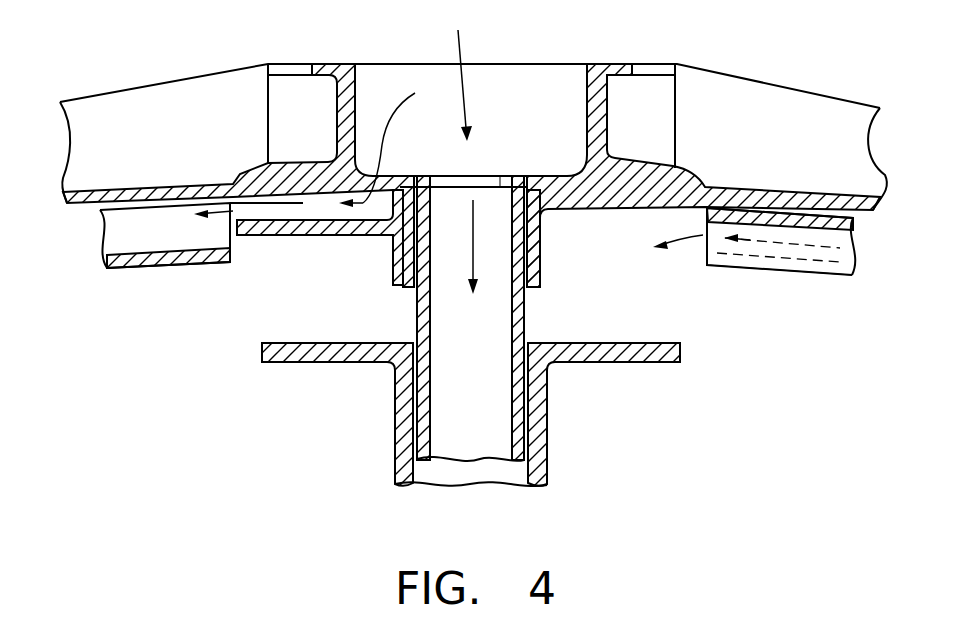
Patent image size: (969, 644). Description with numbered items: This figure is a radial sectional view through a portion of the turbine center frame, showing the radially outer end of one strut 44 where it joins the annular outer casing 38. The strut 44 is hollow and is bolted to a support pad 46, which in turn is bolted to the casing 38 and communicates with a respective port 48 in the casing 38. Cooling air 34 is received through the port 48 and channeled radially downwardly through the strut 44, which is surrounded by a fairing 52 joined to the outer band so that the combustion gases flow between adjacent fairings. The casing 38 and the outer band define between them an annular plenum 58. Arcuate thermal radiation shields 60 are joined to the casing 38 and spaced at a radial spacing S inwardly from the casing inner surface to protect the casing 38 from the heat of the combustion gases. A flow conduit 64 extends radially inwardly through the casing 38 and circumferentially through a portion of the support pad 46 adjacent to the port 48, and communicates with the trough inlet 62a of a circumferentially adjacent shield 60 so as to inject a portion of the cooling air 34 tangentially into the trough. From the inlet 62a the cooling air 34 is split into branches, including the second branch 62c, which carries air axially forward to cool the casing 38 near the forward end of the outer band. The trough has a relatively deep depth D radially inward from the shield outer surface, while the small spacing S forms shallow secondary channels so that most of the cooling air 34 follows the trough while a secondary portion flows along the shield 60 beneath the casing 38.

The cooling air 34 is at (461, 40).
The annular outer casing 38 is at (742, 186).
The strut 44 is at (524, 310).
The support pad 46 is at (540, 240).
The port 48 is at (501, 174).
The fairing 52 is at (547, 418).
The annular plenum 58 is at (367, 316).
The thermal radiation shield 60 is at (128, 284).
The trough inlet 62a is at (197, 246).
The second branch 62c is at (857, 258).
The flow conduit 64 is at (292, 212).
The radial spacing S is at (153, 243).
The trough depth D is at (44, 170).